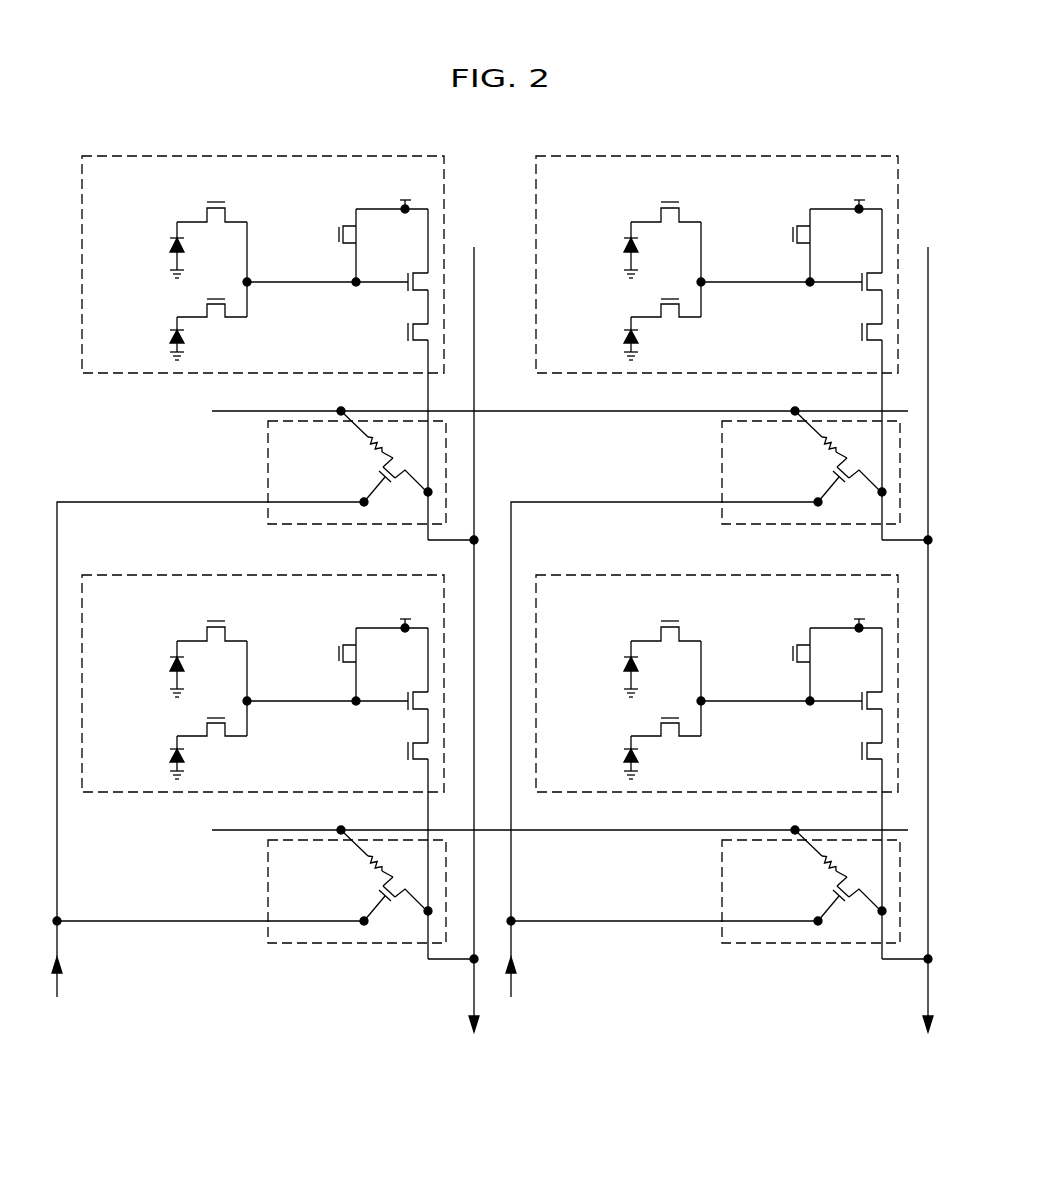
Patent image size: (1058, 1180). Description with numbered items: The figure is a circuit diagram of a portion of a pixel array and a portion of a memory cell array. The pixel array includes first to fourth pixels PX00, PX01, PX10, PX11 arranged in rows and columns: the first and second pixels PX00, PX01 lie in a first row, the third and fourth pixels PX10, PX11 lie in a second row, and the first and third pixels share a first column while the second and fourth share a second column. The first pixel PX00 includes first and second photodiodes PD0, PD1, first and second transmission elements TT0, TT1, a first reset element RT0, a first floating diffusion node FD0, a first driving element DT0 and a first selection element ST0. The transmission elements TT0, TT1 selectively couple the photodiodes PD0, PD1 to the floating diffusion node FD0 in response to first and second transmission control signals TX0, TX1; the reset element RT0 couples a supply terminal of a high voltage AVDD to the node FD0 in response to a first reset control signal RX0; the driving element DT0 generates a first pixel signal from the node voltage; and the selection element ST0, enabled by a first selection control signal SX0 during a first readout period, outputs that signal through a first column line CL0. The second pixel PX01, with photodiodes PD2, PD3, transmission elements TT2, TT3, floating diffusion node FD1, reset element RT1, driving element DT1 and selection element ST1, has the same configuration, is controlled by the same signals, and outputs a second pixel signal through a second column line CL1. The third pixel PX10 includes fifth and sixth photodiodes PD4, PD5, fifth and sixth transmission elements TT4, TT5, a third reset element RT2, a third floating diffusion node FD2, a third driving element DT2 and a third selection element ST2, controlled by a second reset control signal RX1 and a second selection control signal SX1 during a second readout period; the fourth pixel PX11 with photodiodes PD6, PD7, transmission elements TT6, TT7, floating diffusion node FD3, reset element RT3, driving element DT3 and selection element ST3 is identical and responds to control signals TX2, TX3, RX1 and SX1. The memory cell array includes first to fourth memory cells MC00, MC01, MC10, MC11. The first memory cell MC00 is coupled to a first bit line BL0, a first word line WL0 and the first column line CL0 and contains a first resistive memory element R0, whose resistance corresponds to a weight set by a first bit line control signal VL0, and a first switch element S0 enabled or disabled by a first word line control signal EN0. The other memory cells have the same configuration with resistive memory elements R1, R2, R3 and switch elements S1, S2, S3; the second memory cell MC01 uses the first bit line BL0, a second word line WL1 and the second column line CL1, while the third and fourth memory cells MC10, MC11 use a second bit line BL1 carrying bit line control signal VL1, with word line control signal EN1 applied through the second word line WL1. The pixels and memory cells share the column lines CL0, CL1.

The first pixel PX00 is at (140, 192).
The second pixel PX01 is at (717, 264).
The third pixel PX10 is at (263, 683).
The fourth pixel PX11 is at (717, 683).
The first memory cell MC00 is at (328, 459).
The second memory cell MC01 is at (811, 472).
The third memory cell MC10 is at (357, 891).
The fourth memory cell MC11 is at (811, 891).
The first photodiode PD0 is at (158, 250).
The second photodiode PD1 is at (158, 338).
The third photodiode PD2 is at (612, 250).
The fourth photodiode PD3 is at (612, 338).
The fifth photodiode PD4 is at (158, 669).
The sixth photodiode PD5 is at (158, 757).
The seventh photodiode PD6 is at (612, 669).
The eighth photodiode PD7 is at (612, 757).
The first transmission element TT0 is at (212, 228).
The second transmission element TT1 is at (212, 326).
The third transmission element TT2 is at (666, 228).
The fourth transmission element TT3 is at (666, 326).
The fifth transmission element TT4 is at (212, 647).
The sixth transmission element TT5 is at (212, 745).
The seventh transmission element TT6 is at (666, 647).
The eighth transmission element TT7 is at (666, 745).
The first transmission control signal TX0 is at (216, 202).
The second transmission control signal TX1 is at (216, 299).
The transmission control signal TX2 is at (442, 603).
The transmission control signal TX3 is at (442, 700).
The first floating diffusion node FD0 is at (325, 269).
The second floating diffusion node FD1 is at (779, 269).
The third floating diffusion node FD2 is at (325, 688).
The fourth floating diffusion node FD3 is at (779, 688).
The first reset control signal RX0 is at (339, 234).
The second reset control signal RX1 is at (543, 654).
The first reset element RT0 is at (367, 245).
The second reset element RT1 is at (821, 245).
The third reset element RT2 is at (367, 664).
The fourth reset element RT3 is at (821, 664).
The high voltage AVDD is at (619, 402).
The first driving element DT0 is at (410, 264).
The second driving element DT1 is at (864, 264).
The third driving element DT2 is at (410, 683).
The fourth driving element DT3 is at (864, 683).
The first selection control signal SX0 is at (408, 332).
The second selection control signal SX1 is at (613, 749).
The first selection element ST0 is at (410, 329).
The second selection element ST1 is at (864, 329).
The third selection element ST2 is at (410, 748).
The fourth selection element ST3 is at (864, 748).
The first resistive memory element R0 is at (371, 432).
The resistive memory element R1 is at (825, 432).
The resistive memory element R2 is at (371, 851).
The resistive memory element R3 is at (825, 851).
The first switch element S0 is at (396, 486).
The switch element S1 is at (850, 486).
The switch element S2 is at (396, 905).
The switch element S3 is at (850, 905).
The first bit line control signal VL0 is at (186, 411).
The bit line control signal VL1 is at (186, 830).
The first bit line BL0 is at (228, 413).
The second bit line BL1 is at (228, 832).
The first word line WL0 is at (60, 936).
The second word line WL1 is at (514, 936).
The first word line control signal EN0 is at (56, 974).
The word line control signal EN1 is at (511, 974).
The first column line CL0 is at (471, 975).
The second column line CL1 is at (925, 975).